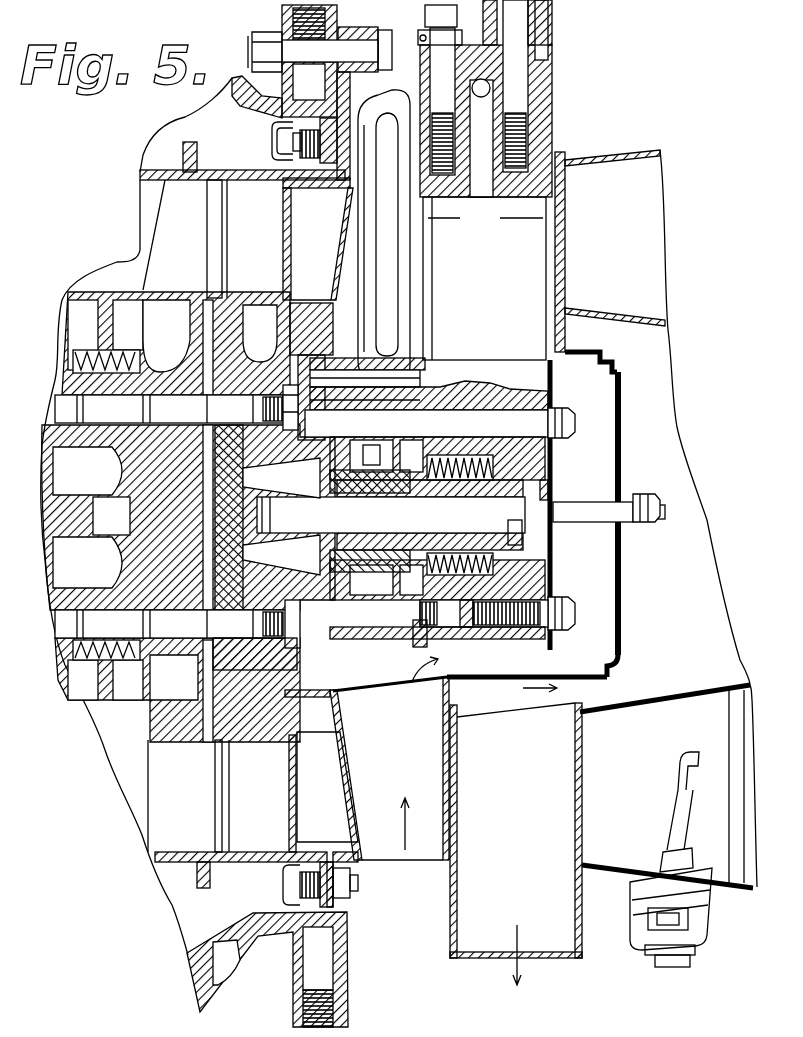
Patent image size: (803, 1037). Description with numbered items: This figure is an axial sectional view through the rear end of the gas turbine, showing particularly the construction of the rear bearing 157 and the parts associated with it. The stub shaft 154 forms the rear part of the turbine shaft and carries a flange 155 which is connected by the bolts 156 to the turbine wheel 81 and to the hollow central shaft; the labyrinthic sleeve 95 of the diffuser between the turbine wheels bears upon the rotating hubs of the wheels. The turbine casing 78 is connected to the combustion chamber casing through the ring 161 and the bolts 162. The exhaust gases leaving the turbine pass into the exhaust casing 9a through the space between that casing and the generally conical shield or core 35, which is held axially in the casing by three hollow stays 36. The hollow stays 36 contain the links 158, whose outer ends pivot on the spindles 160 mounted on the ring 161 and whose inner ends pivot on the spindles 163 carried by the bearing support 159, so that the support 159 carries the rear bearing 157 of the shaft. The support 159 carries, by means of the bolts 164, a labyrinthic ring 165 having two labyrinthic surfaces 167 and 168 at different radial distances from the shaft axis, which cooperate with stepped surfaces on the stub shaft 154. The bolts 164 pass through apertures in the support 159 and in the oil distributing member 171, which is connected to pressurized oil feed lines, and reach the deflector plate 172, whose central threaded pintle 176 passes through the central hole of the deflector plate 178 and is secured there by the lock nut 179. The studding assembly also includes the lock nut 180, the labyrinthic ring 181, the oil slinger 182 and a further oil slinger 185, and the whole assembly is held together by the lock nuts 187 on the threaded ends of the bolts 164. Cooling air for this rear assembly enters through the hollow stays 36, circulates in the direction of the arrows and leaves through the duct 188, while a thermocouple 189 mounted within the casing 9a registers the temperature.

The spindle 160 is at (292, 40).
The ring 161 is at (243, 108).
The turbine casing 78 is at (208, 170).
The bolt 162 is at (277, 150).
The link 158 is at (377, 98).
The turbine wheel 81 is at (248, 240).
The oil distributing member 171 is at (485, 180).
The exhaust casing 9a is at (607, 162).
The spindle 163 is at (425, 365).
The bearing support 159 is at (430, 404).
The bolt 164 is at (485, 400).
The labyrinthic ring 165 is at (314, 380).
The lock nut 187 is at (565, 407).
The labyrinthic surface 167 is at (350, 438).
The deflector plate 178 is at (623, 440).
The lock nut 180 is at (538, 482).
The deflector plate 172 is at (554, 460).
The threaded pintle 176 is at (582, 504).
The lock nut 179 is at (642, 497).
The labyrinthic surface 168 is at (302, 466).
The oil slinger 185 is at (335, 485).
The rear bearing 157 is at (377, 556).
The oil slinger 182 is at (408, 488).
The stub shaft 154 is at (462, 492).
The labyrinthic ring 181 is at (478, 488).
The bolt 156 is at (64, 405).
The flange 155 is at (300, 660).
The labyrinthic sleeve 95 is at (100, 662).
The shield or core 35 is at (541, 685).
The hollow stay 36 is at (367, 768).
The duct 188 is at (516, 844).
The thermocouple 189 is at (673, 803).